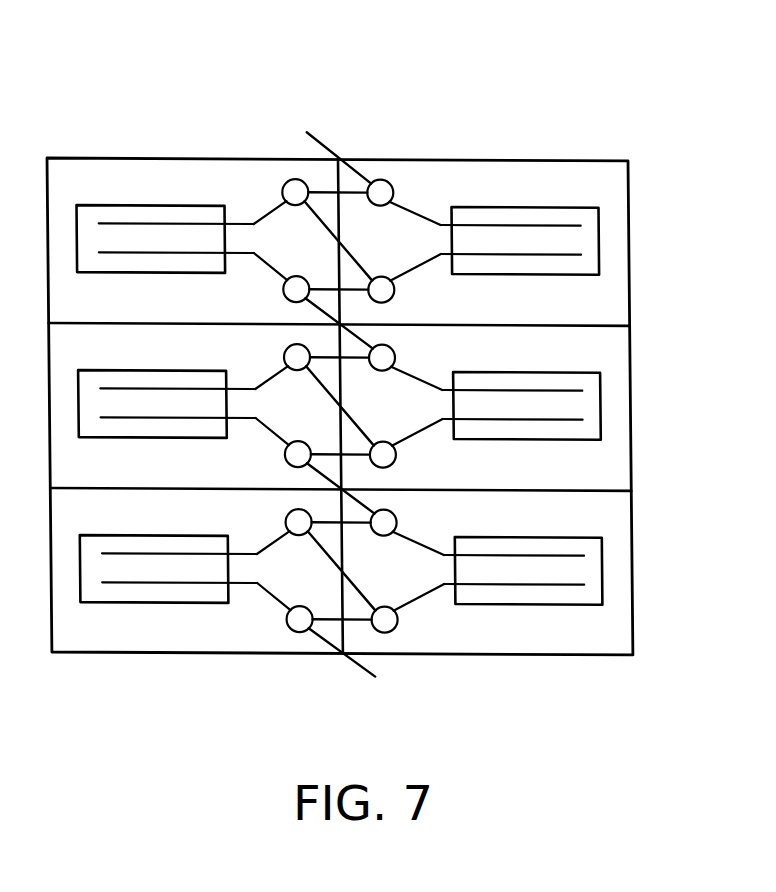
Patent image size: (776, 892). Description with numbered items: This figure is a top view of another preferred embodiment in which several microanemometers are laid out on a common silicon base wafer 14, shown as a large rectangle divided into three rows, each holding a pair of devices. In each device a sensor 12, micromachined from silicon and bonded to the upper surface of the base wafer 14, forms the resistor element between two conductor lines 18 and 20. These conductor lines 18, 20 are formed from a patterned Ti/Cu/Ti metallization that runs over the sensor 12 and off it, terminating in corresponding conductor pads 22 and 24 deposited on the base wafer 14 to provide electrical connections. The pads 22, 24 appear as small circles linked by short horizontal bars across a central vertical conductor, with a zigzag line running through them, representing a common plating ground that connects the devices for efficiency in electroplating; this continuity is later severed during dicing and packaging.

The sensor 12 is at (585, 237).
The base wafer 14 is at (603, 175).
The conductor line 18 is at (532, 235).
The conductor line 20 is at (543, 265).
The conductor pad 22 is at (384, 184).
The conductor pad 24 is at (388, 291).